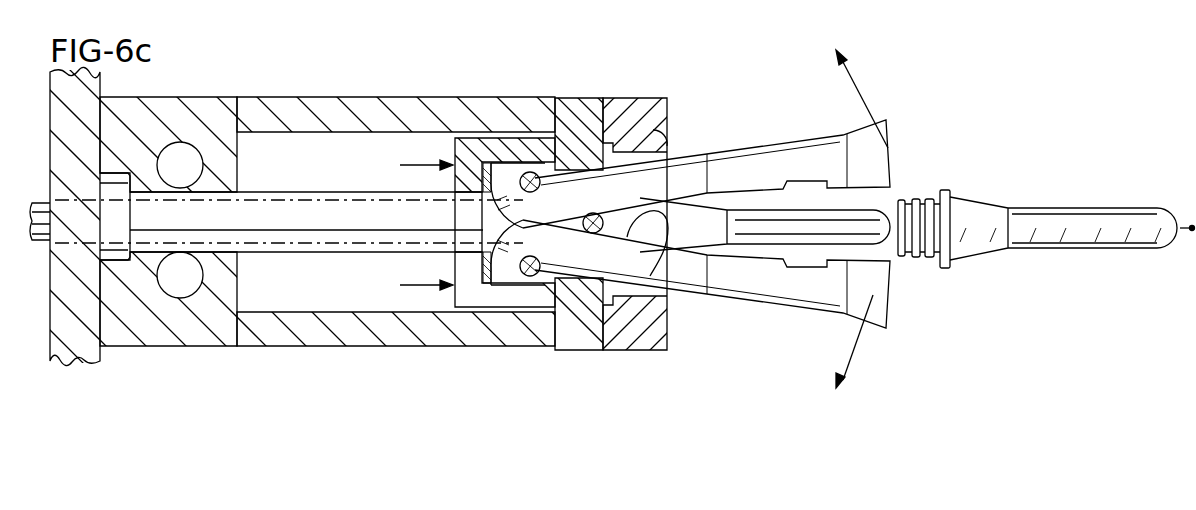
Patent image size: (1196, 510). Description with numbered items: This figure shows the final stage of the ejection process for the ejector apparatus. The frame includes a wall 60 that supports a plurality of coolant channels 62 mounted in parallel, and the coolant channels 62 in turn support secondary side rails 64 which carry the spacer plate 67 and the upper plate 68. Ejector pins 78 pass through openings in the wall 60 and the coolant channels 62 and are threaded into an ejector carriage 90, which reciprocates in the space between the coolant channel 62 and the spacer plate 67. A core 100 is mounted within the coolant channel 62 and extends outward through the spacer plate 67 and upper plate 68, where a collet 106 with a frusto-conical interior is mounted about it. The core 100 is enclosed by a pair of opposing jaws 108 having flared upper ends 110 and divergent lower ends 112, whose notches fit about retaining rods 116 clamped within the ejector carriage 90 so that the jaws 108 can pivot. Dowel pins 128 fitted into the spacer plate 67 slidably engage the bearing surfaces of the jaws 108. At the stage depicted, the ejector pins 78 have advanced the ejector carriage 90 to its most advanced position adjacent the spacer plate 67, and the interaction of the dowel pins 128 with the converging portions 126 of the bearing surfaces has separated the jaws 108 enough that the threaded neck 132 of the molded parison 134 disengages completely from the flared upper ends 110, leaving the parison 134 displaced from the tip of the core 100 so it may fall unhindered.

The wall 60 is at (76, 348).
The coolant channel 62 is at (185, 332).
The secondary side rail 64 is at (347, 340).
The spacer plate 67 is at (585, 342).
The upper plate 68 is at (645, 342).
The ejector pin 78 is at (42, 200).
The ejector carriage 90 is at (478, 342).
The core 100 is at (394, 228).
The collet 106 is at (667, 131).
The jaw 108 is at (760, 186).
The flared upper end 110 is at (880, 142).
The divergent lower end 112 is at (500, 178).
The retaining rod 116 is at (536, 176).
The converging portion 126 is at (622, 230).
The dowel pin 128 is at (590, 213).
The threaded neck 132 is at (916, 197).
The parison 134 is at (1090, 222).